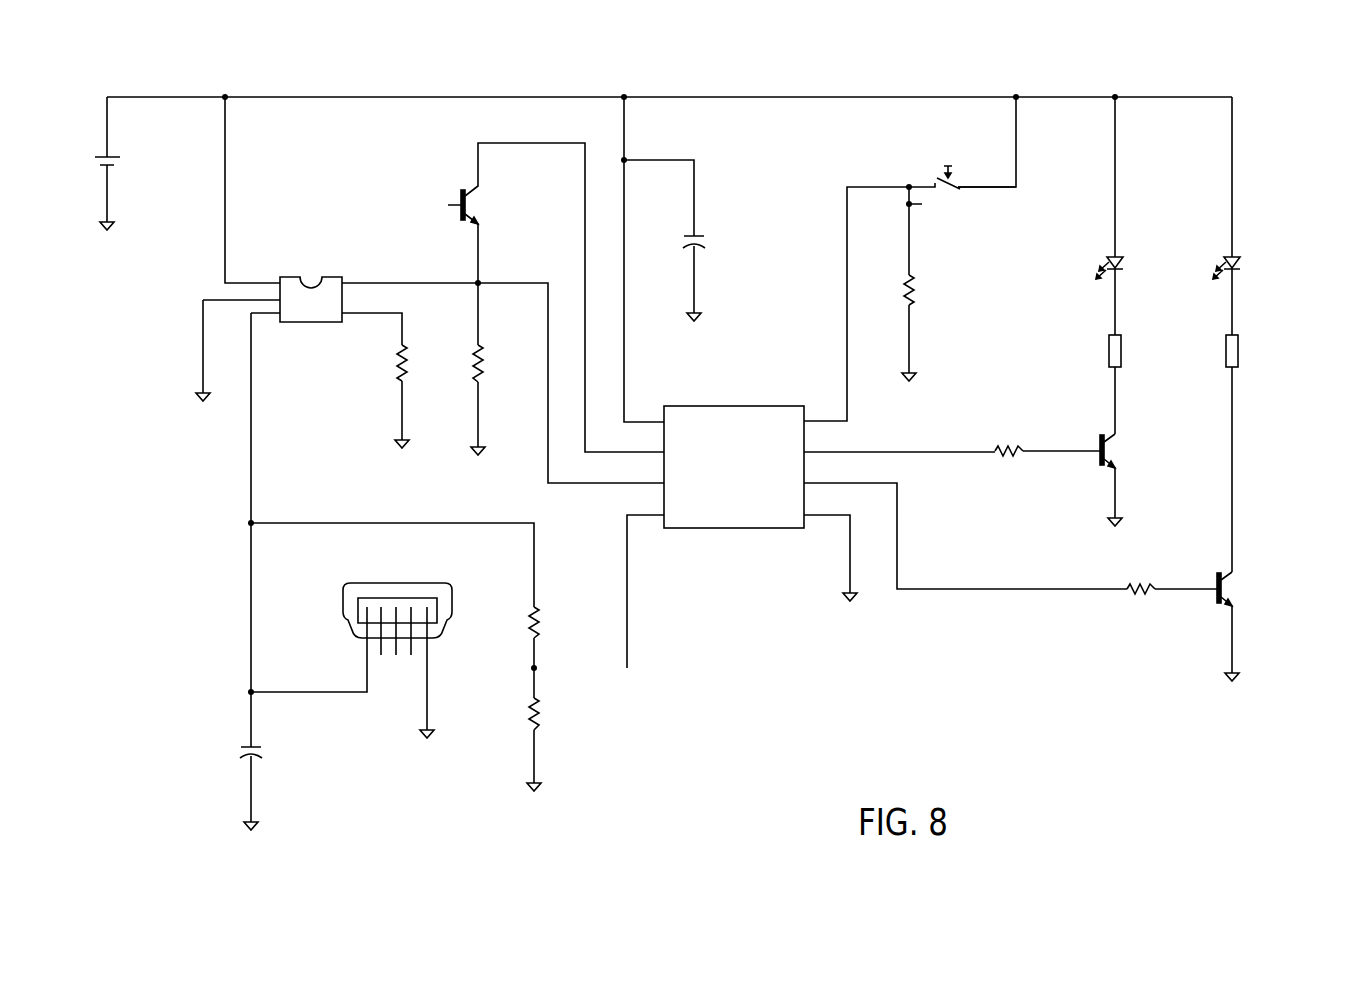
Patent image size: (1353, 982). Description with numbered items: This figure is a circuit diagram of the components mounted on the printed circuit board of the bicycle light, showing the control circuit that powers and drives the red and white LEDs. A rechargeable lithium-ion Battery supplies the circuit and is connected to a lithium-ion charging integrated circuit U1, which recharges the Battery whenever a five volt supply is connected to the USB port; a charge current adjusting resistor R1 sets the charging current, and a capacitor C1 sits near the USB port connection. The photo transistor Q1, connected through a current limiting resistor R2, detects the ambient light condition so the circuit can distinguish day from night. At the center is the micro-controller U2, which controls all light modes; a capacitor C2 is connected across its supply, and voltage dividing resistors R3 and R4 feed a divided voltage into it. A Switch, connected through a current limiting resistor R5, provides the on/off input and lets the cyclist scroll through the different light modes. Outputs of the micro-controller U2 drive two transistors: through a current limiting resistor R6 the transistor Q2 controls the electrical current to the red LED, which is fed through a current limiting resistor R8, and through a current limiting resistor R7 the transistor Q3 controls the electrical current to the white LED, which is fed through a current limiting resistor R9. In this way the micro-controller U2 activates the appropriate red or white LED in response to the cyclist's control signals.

The battery Battery is at (138, 180).
The Li-Ion charging I.C. U1 is at (430, 512).
The photo transistor Q1 is at (556, 297).
The charge current adjusting resistor R1 is at (413, 396).
The current limiting resistor R2 is at (492, 369).
The capacitor C2 is at (674, 240).
The micro-controller U2 is at (877, 427).
The switch Switch is at (962, 199).
The current limiting resistor R5 is at (923, 284).
The current limiting resistor R8 is at (1128, 384).
The current limiting resistor R9 is at (1247, 453).
The current limiting resistor R6 is at (952, 439).
The transistor Q2 is at (1126, 480).
The current limiting resistor R7 is at (1172, 577).
The transistor Q3 is at (1242, 626).
The voltage dividing resistor R3 is at (409, 595).
The voltage dividing resistor R4 is at (547, 729).
The capacitor C1 is at (260, 788).